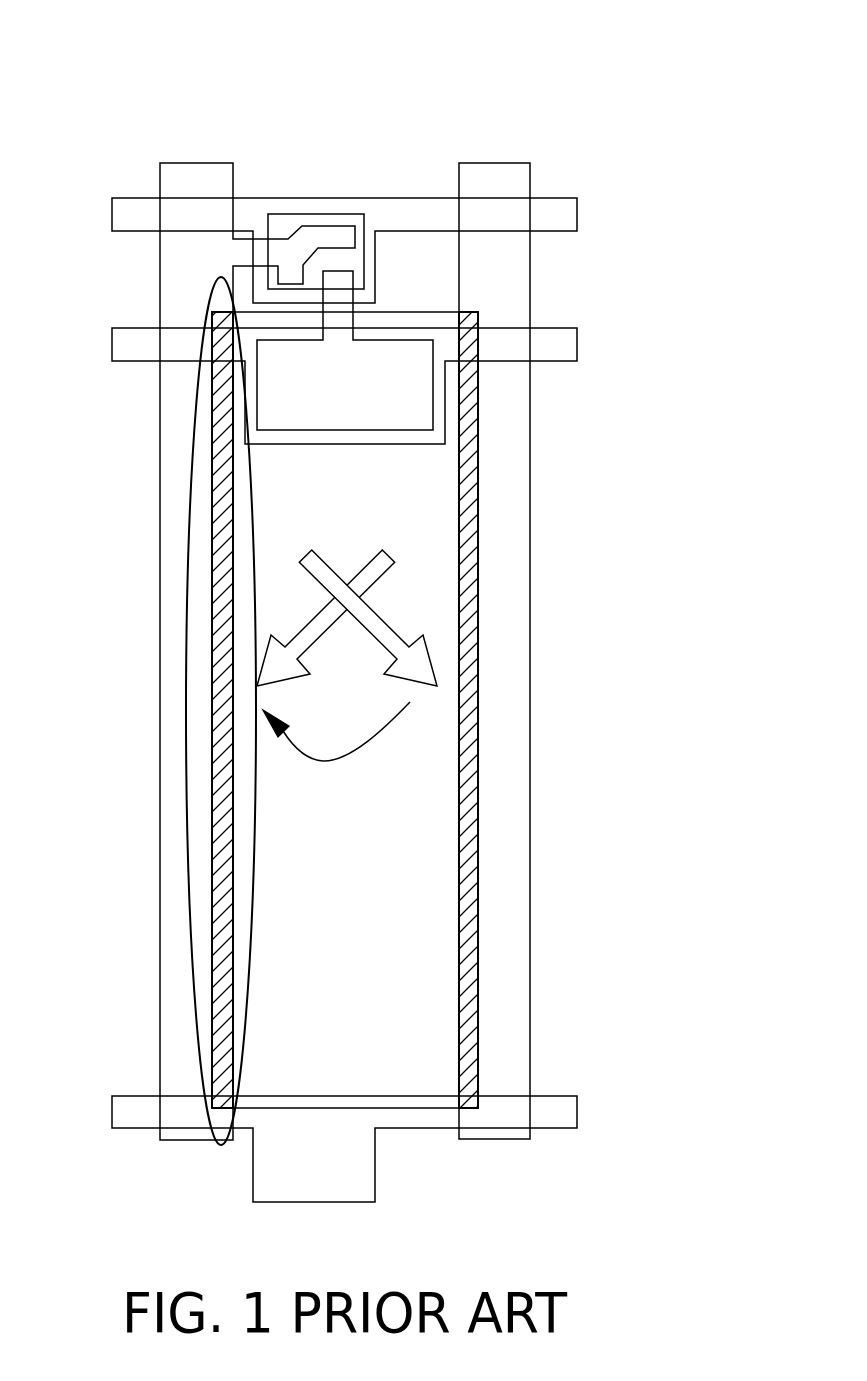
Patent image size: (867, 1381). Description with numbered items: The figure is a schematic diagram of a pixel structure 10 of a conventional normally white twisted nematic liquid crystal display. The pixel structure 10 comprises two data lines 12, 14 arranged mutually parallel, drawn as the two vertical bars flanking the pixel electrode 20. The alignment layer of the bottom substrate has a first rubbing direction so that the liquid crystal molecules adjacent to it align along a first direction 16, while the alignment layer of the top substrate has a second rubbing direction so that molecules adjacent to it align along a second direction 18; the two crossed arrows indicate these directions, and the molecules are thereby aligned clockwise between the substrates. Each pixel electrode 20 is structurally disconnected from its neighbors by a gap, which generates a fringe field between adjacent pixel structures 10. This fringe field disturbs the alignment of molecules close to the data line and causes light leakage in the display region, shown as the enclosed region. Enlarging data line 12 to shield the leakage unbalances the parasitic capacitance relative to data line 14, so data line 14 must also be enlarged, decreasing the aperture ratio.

The pixel structure 10 is at (622, 66).
The data line 12 is at (160, 557).
The data line 14 is at (532, 548).
The first direction 16 is at (420, 662).
The second direction 18 is at (278, 667).
The pixel electrode 20 is at (345, 978).